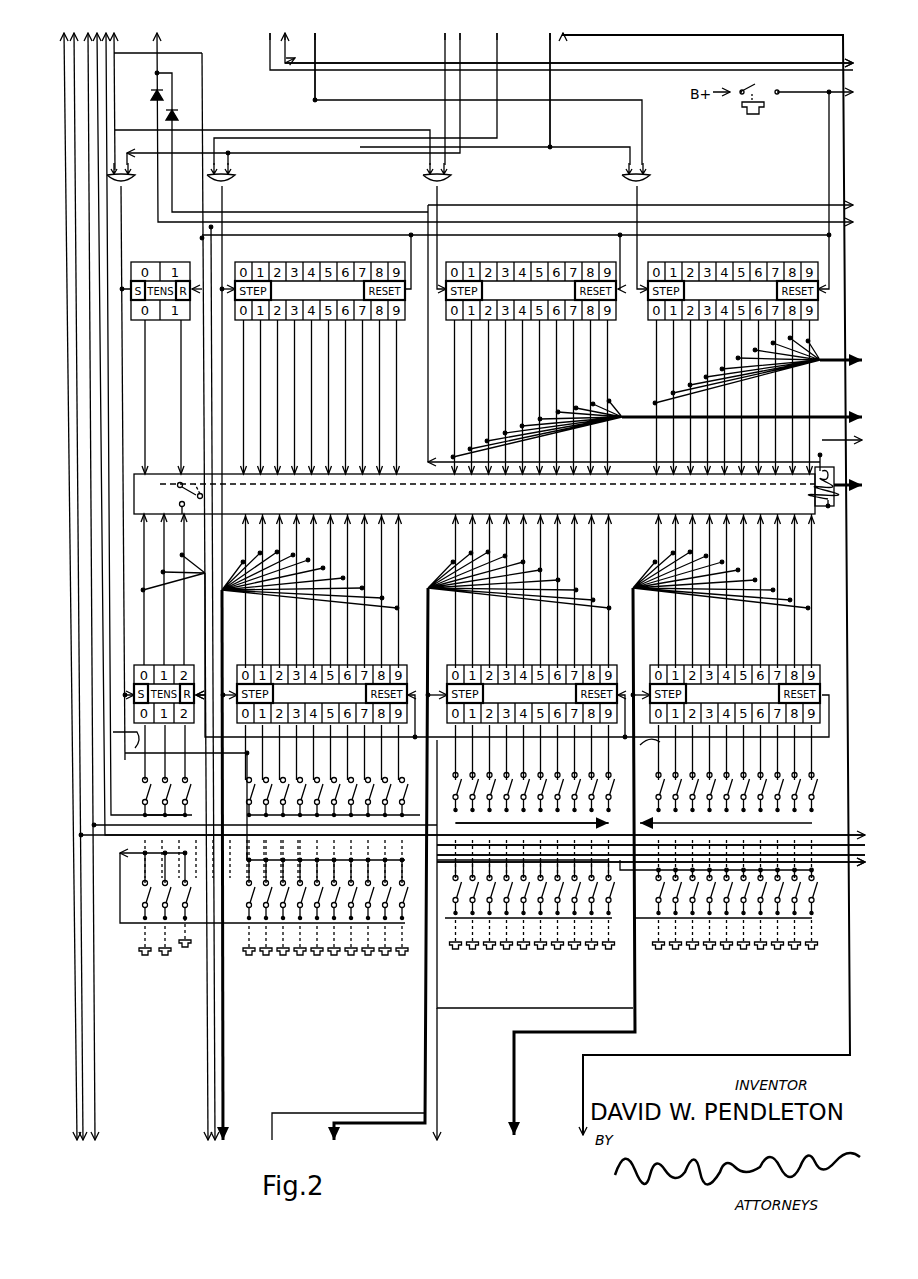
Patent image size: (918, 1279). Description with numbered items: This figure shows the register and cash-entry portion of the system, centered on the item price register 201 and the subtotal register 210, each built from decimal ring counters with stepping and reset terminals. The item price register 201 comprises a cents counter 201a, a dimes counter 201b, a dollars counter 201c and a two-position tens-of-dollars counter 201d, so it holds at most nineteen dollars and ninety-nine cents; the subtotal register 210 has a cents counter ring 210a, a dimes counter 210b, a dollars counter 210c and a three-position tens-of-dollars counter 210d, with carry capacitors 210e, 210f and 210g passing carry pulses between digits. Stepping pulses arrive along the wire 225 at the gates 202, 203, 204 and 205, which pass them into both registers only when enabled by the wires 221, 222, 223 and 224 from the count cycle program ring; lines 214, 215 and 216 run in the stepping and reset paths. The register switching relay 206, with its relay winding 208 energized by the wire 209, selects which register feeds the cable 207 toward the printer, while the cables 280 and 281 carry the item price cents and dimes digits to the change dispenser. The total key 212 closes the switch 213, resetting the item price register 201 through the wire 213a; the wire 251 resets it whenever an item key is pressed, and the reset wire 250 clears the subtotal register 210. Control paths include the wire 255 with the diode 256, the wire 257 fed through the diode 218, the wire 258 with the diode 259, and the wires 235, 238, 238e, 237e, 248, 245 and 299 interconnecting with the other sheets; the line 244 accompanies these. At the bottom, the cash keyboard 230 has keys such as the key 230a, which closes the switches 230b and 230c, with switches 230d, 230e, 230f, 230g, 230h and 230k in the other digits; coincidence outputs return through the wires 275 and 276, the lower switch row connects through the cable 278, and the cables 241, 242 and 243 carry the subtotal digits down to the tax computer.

The item price register 201 is at (797, 257).
The cents counter 201a is at (638, 306).
The dimes counter 201b is at (526, 352).
The dollars counter 201c is at (232, 312).
The tens-of-dollars counter 201d is at (165, 322).
The gate 202 is at (647, 176).
The gate 203 is at (448, 177).
The gate 204 is at (232, 178).
The gate 205 is at (133, 180).
The register switching relay 206 is at (727, 502).
The cable 207 is at (842, 500).
The relay winding 208 is at (818, 452).
The wire 209 is at (840, 416).
The subtotal register 210 is at (735, 650).
The cents counter ring 210a is at (820, 667).
The dimes counter 210b is at (618, 667).
The dollars counter 210c is at (408, 668).
The tens-of-dollars counter 210d is at (200, 648).
The capacitor 210e is at (655, 748).
The capacitor 210f is at (445, 755).
The capacitor 210g is at (128, 745).
The total key 212 is at (742, 108).
The switch 213 is at (757, 85).
The wire 213a is at (697, 230).
The step line 214 is at (440, 200).
The step line 215 is at (225, 203).
The tens register 216 is at (118, 258).
The diode 218 is at (439, 433).
The wire 221 is at (440, 45).
The wire 222 is at (458, 60).
The wire 223 is at (497, 45).
The wire 224 is at (500, 100).
The wire 225 is at (551, 100).
The cash keyboard 230 is at (580, 1002).
The $20 key 230a is at (190, 950).
The switch 230b is at (190, 895).
The switch 230c is at (190, 792).
The switch 230d is at (249, 920).
The switch 230e is at (249, 800).
The switch 230f is at (455, 882).
The switch 230g is at (353, 801).
The switch 230h is at (658, 882).
The switch 230k is at (652, 785).
The wire 235 is at (315, 55).
The wire 237e is at (82, 1035).
The wire 238 is at (270, 60).
The wire 238e is at (95, 1067).
The cable 241 is at (637, 1012).
The cable 242 is at (400, 1110).
The cable 243 is at (224, 1058).
The line 244 is at (209, 1085).
The cable 245 is at (848, 970).
The wire 248 is at (75, 993).
The reset wire 250 is at (832, 725).
The wire 251 is at (202, 84).
The wire 255 is at (757, 220).
The diode 256 is at (153, 93).
The wire 257 is at (295, 60).
The wire 258 is at (534, 207).
The diode 259 is at (190, 108).
The wire 275 is at (102, 462).
The wire 276 is at (108, 440).
The cable 278 is at (830, 865).
The cable 280 is at (828, 357).
The cable 281 is at (633, 420).
The wire 299 is at (550, 52).